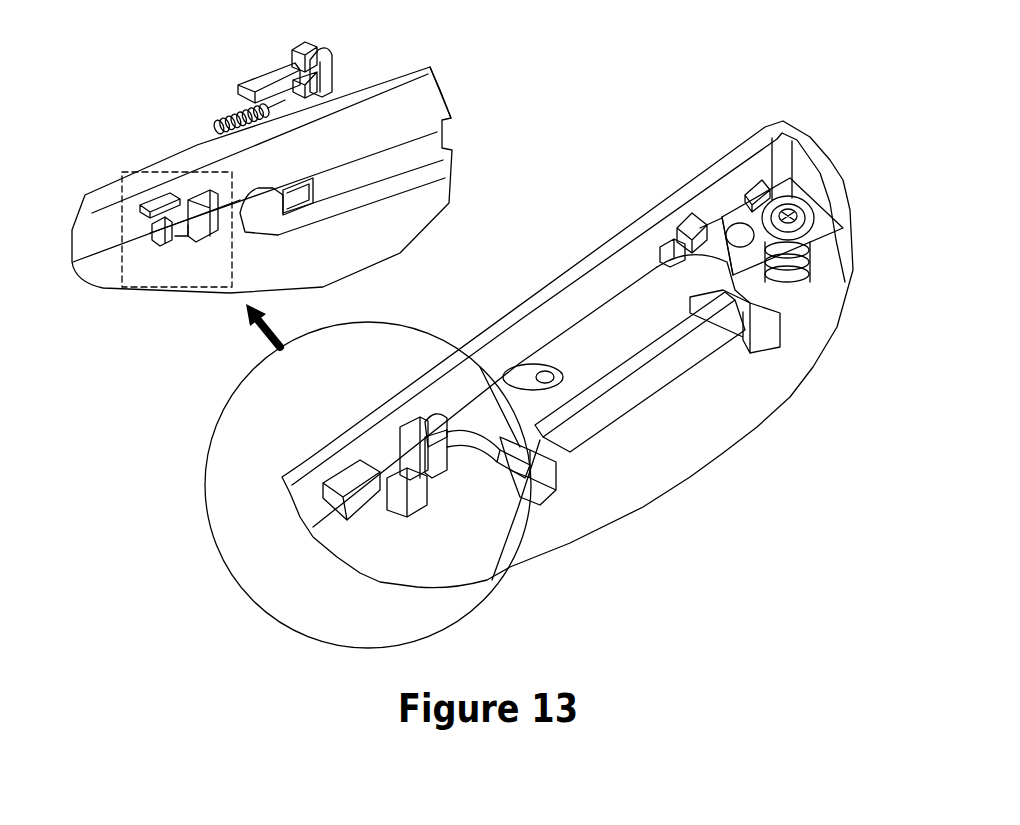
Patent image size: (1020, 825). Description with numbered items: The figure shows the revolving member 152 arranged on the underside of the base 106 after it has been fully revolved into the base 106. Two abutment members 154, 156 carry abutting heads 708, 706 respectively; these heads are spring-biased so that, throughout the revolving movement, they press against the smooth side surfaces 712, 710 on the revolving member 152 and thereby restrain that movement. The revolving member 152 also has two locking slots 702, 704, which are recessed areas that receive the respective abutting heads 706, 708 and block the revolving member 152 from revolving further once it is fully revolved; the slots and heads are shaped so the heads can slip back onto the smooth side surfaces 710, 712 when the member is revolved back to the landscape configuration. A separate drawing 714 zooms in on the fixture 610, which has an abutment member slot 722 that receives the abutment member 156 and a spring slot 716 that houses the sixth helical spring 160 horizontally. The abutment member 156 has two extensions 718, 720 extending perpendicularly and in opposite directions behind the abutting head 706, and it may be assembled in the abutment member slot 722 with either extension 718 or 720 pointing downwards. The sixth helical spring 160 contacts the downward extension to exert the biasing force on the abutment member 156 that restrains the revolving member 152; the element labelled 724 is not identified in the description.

The base 106 is at (793, 130).
The revolving member 152 is at (605, 358).
The abutment member 154 is at (677, 240).
The abutment member 156 is at (432, 418).
The sixth helical spring 160 is at (223, 121).
The fixture 610 is at (120, 200).
The locking slot 702 is at (512, 457).
The locking slot 704 is at (758, 303).
The abutting head 706 is at (447, 447).
The abutting head 708 is at (667, 253).
The smooth side surface 710 is at (468, 443).
The smooth side surface 712 is at (722, 255).
The separate drawing 714 is at (450, 183).
The spring slot 716 is at (193, 190).
The extension 718 is at (302, 45).
The extension 720 is at (330, 87).
The abutment member slot 722 is at (155, 203).
The slider bar 724 is at (255, 82).